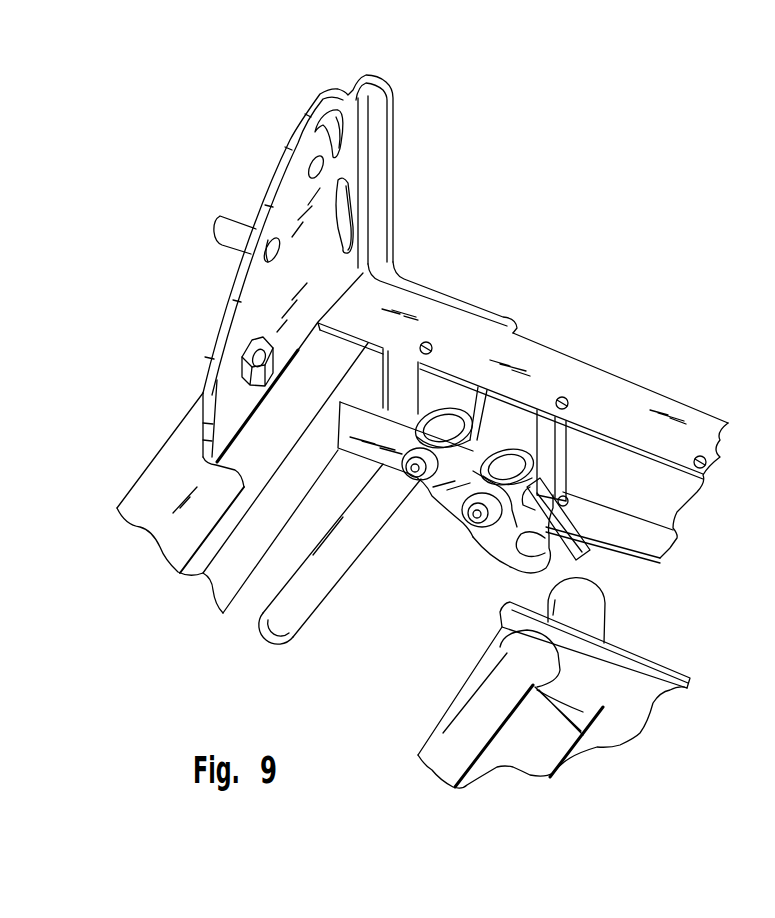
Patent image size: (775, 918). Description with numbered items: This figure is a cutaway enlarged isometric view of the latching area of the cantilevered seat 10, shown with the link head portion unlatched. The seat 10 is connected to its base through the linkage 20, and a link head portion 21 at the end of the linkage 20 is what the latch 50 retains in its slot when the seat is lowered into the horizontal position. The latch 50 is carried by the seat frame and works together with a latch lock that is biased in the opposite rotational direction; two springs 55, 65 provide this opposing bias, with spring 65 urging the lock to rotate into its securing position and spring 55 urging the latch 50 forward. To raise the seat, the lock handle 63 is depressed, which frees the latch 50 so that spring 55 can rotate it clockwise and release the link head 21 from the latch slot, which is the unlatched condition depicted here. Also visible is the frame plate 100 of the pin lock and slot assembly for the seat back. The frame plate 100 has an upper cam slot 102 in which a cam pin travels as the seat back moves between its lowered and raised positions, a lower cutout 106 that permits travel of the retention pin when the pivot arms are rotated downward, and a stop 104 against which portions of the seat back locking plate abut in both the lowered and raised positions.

The cantilevered seat 10 is at (650, 387).
The linkage 20 is at (653, 692).
The link head portion 21 is at (590, 604).
The latch 50 is at (557, 533).
The spring 55 is at (508, 448).
The lock handle 63 is at (333, 572).
The spring 65 is at (442, 410).
The frame plate 100 is at (295, 132).
The upper cam slot 102 is at (338, 118).
The stop 104 is at (217, 218).
The lower cutout 106 is at (349, 190).